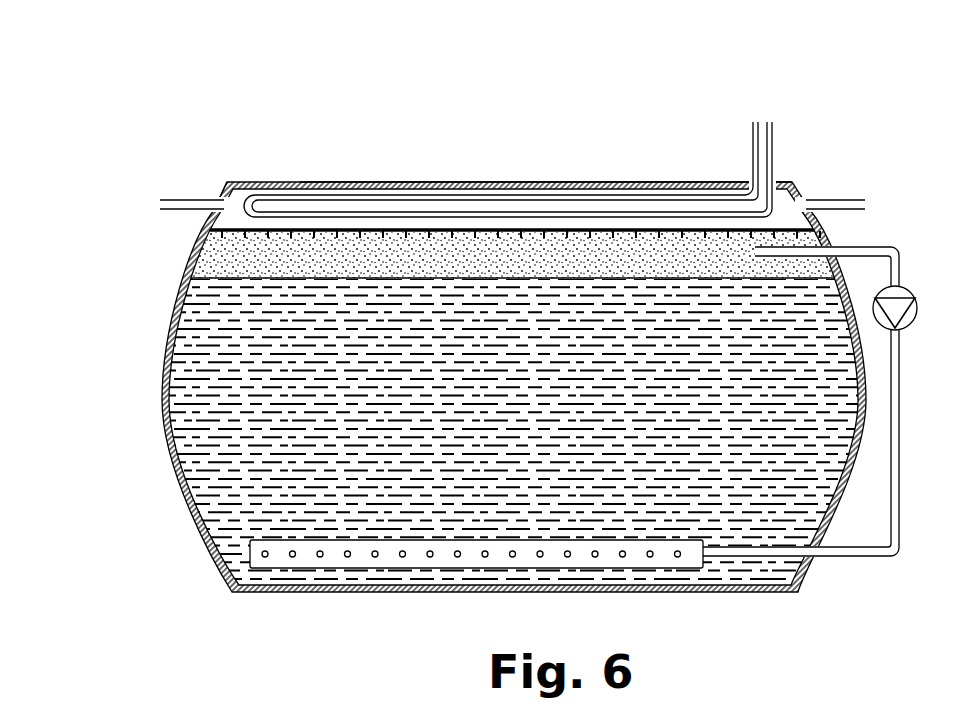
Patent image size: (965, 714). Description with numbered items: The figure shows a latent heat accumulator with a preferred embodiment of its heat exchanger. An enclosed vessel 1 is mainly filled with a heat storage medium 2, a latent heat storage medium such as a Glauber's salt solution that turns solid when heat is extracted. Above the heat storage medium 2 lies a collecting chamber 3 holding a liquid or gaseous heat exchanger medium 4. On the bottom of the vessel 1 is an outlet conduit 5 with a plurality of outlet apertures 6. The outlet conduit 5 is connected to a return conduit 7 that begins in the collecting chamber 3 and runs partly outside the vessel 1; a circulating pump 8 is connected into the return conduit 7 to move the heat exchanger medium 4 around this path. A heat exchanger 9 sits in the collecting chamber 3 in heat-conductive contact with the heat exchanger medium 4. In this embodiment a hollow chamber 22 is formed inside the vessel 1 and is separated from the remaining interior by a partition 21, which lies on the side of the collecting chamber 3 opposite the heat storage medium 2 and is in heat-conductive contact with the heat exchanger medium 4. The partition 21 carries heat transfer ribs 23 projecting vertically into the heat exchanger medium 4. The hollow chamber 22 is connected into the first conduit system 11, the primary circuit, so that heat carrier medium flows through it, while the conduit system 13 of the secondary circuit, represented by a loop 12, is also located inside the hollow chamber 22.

The vessel 1 is at (165, 413).
The heat storage medium 2 is at (217, 360).
The collecting chamber 3 is at (227, 266).
The heat exchanger medium 4 is at (213, 245).
The outlet conduit 5 is at (357, 568).
The outlet apertures 6 is at (430, 558).
The return conduit 7 is at (900, 414).
The circulating pump 8 is at (917, 310).
The heat exchanger 9 is at (483, 180).
The first conduit system 11 is at (143, 195).
The loop 12 is at (397, 195).
The conduit system 13 is at (761, 97).
The partition 21 is at (521, 240).
The hollow chamber 22 is at (237, 197).
The heat transfer ribs 23 is at (360, 240).